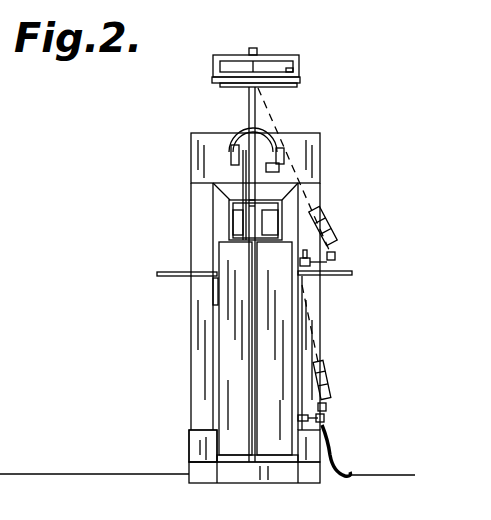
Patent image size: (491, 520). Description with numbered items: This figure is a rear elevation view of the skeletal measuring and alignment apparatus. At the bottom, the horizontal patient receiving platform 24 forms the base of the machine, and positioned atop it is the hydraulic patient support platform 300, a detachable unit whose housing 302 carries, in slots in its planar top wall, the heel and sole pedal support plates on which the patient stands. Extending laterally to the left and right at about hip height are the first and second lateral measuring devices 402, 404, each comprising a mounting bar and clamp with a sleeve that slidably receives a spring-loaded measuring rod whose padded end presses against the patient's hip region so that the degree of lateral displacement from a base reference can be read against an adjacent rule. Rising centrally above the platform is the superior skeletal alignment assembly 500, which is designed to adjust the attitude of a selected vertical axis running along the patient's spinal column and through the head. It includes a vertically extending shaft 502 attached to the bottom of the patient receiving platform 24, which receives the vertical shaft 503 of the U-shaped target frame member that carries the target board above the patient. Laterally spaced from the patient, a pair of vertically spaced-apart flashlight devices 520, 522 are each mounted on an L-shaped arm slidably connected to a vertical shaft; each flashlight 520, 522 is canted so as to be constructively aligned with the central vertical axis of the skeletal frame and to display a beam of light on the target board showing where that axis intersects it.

The horizontal patient receiving platform 24 is at (194, 468).
The hydraulic patient support platform 300 is at (340, 443).
The housing 302 is at (192, 437).
The first lateral measuring device 402 is at (163, 258).
The second lateral measuring device 404 is at (355, 260).
The superior skeletal alignment assembly 500 is at (323, 100).
The vertically extending shaft 502 is at (257, 380).
The vertical shaft of target frame member 503 is at (249, 107).
The flashlight device 520 is at (333, 222).
The flashlight device 522 is at (328, 382).